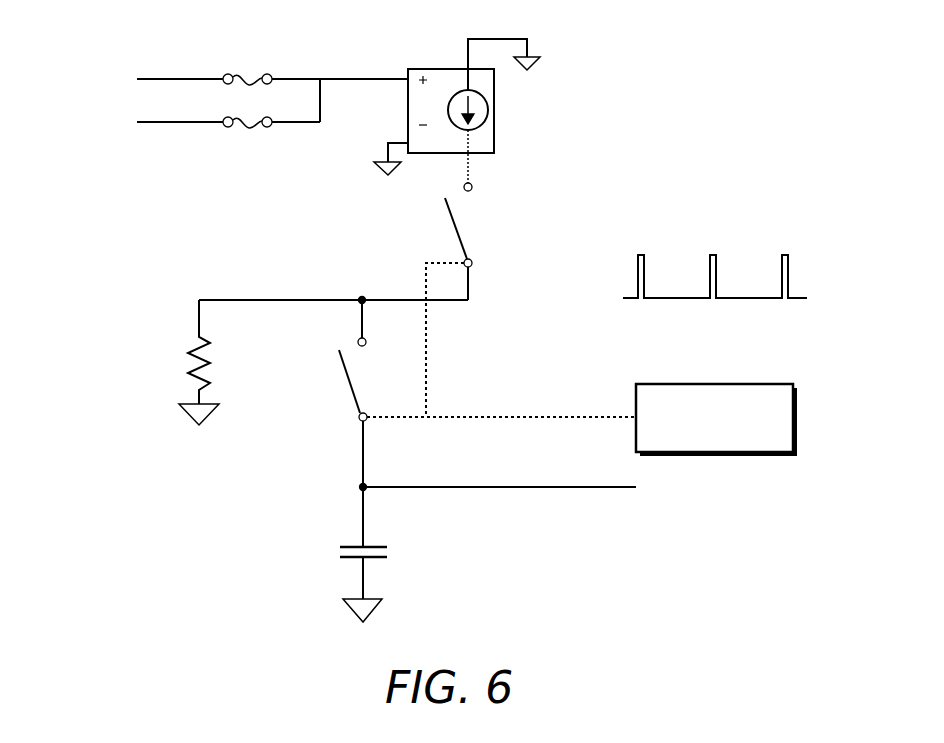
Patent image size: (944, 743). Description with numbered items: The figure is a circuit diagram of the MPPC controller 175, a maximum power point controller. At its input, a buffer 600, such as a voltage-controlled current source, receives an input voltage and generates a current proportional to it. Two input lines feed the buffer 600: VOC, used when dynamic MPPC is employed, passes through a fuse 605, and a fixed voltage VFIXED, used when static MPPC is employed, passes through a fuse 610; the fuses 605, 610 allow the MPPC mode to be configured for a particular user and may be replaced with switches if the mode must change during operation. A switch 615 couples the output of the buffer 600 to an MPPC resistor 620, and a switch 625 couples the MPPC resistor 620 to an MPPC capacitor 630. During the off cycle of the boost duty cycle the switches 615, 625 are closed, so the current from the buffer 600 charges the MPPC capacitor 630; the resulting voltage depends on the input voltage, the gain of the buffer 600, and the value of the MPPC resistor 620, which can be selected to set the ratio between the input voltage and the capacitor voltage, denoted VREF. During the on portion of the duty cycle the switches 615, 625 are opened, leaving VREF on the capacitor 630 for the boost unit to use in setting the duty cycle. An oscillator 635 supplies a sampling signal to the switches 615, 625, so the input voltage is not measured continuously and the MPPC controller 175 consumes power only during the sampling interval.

The MPPC controller 175 is at (630, 562).
The buffer 600 is at (409, 69).
The fuse 605 is at (227, 73).
The fuse 610 is at (227, 128).
The switch 615 is at (455, 233).
The MPPC resistor 620 is at (190, 349).
The switch 625 is at (353, 387).
The MPPC capacitor 630 is at (350, 545).
The oscillator 635 is at (796, 416).